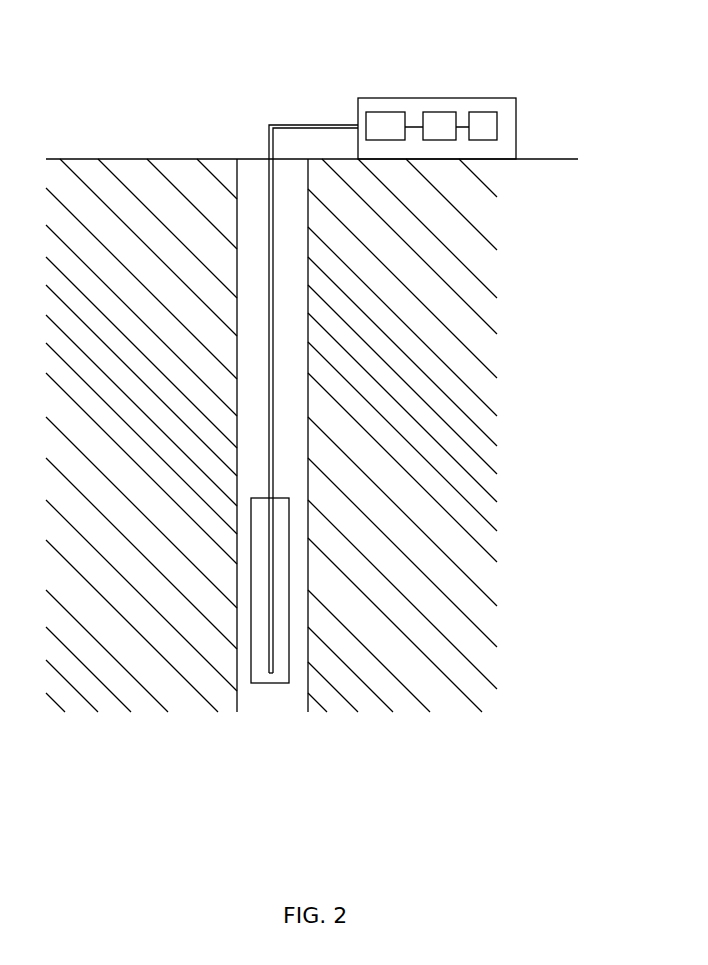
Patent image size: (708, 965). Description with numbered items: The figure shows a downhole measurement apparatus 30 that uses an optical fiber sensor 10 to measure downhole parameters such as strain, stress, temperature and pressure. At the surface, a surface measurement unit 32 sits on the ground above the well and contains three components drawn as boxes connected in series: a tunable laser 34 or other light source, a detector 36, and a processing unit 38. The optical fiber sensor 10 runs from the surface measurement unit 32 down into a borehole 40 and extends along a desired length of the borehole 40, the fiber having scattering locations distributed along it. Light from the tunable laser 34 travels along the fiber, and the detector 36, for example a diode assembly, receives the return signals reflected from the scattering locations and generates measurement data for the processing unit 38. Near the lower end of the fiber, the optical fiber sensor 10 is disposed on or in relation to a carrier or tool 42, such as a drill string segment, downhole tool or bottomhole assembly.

The downhole measurement apparatus 30 is at (207, 50).
The optical fiber sensor 10 is at (268, 136).
The surface measurement unit 32 is at (357, 96).
The tunable laser 34 is at (392, 118).
The detector 36 is at (440, 120).
The processing unit 38 is at (485, 118).
The borehole 40 is at (273, 390).
The carrier or tool 42 is at (258, 670).